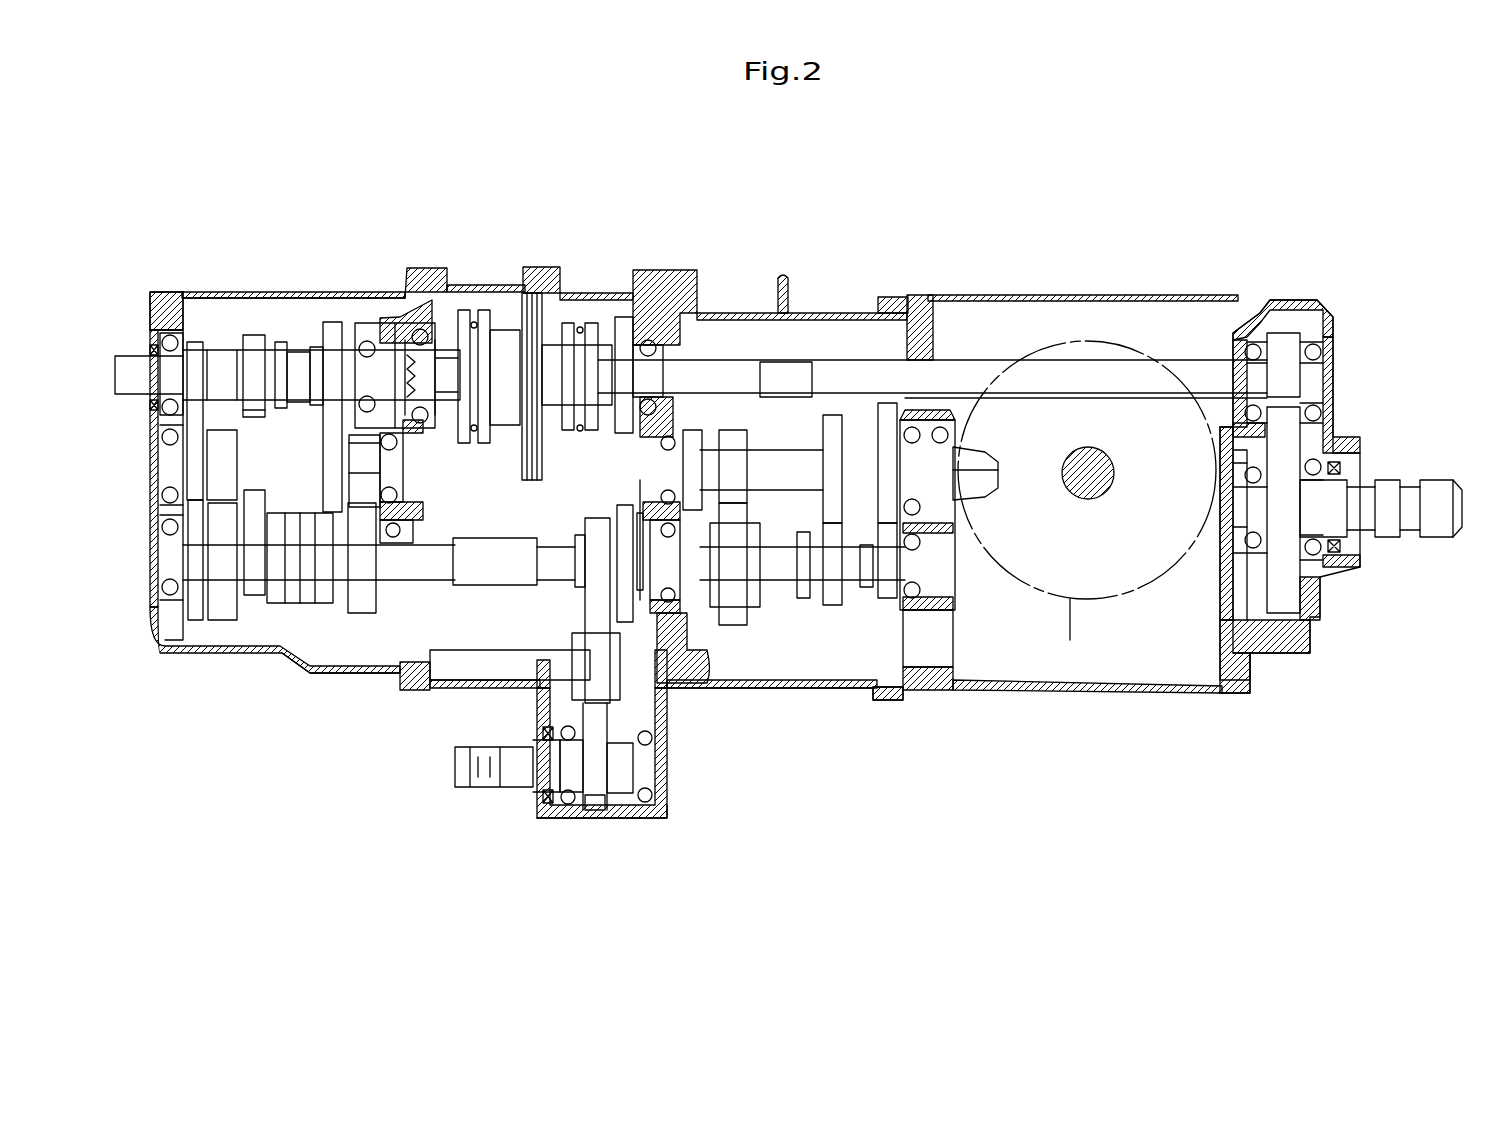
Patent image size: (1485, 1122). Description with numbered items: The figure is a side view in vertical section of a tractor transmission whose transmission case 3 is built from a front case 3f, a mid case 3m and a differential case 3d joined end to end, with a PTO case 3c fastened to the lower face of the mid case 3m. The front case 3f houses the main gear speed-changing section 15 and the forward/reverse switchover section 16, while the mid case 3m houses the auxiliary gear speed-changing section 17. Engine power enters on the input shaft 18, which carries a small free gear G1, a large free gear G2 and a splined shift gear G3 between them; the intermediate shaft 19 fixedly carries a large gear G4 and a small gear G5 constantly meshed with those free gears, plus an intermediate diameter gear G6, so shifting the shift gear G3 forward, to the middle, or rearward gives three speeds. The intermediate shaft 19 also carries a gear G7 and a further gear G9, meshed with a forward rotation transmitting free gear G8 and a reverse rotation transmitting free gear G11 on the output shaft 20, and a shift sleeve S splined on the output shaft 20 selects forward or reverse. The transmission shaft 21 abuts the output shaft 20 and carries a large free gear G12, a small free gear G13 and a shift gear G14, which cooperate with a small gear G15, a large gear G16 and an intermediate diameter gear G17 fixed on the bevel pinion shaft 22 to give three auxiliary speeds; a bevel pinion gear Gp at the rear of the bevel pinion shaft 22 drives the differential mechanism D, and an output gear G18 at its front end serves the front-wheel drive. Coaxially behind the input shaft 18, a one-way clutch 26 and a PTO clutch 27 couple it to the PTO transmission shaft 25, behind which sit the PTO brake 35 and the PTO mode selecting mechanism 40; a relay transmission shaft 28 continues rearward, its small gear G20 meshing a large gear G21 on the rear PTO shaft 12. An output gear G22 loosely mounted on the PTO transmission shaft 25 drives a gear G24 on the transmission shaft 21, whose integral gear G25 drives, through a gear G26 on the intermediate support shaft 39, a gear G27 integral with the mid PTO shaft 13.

The transmission case 3 is at (828, 284).
The front case 3f is at (160, 291).
The mid case 3m is at (843, 695).
The differential case 3d is at (1213, 693).
The PTO case 3c is at (548, 820).
The rear PTO shaft 12 is at (1430, 480).
The mid PTO shaft 13 is at (458, 762).
The main gear speed-changing section 15 is at (291, 313).
The forward/reverse switchover section 16 is at (305, 652).
The auxiliary gear speed-changing section 17 is at (783, 640).
The input shaft 18 is at (132, 395).
The intermediate shaft 19 is at (155, 470).
The output shaft 20 is at (425, 565).
The transmission shaft 21 is at (920, 565).
The bevel pinion shaft 22 is at (788, 450).
The PTO transmission shaft 25 is at (705, 360).
The one-way clutch 26 is at (400, 343).
The PTO clutch 27 is at (476, 310).
The relay transmission shaft 28 is at (1086, 362).
The PTO brake 35 is at (495, 561).
The intermediate support shaft 39 is at (478, 672).
The PTO mode selecting mechanism 40 is at (580, 318).
The differential mechanism D is at (1070, 600).
The shift sleeve S is at (293, 515).
The bevel pinion gear Gp is at (985, 455).
The small free gear G1 is at (195, 342).
The large free gear G2 is at (334, 322).
The shift gear G3 is at (256, 335).
The large gear G4 is at (196, 522).
The small gear G5 is at (408, 512).
The intermediate diameter gear G6 is at (255, 540).
The gear G7 is at (228, 413).
The forward rotation transmitting free gear G8 is at (222, 622).
The gear G9 is at (365, 460).
The reverse rotation transmitting free gear G11 is at (356, 615).
The large free gear G12 is at (736, 627).
The small free gear G13 is at (883, 598).
The shift gear G14 is at (827, 607).
The small gear G15 is at (740, 430).
The large gear G16 is at (887, 403).
The intermediate diameter gear G17 is at (832, 470).
The output gear G18 is at (682, 468).
The small gear G20 is at (1282, 355).
The large gear G21 is at (1300, 580).
The output gear G22 is at (626, 318).
The gear G24 is at (625, 505).
The gear G25 is at (592, 560).
The gear G26 is at (603, 712).
The gear G27 is at (598, 792).